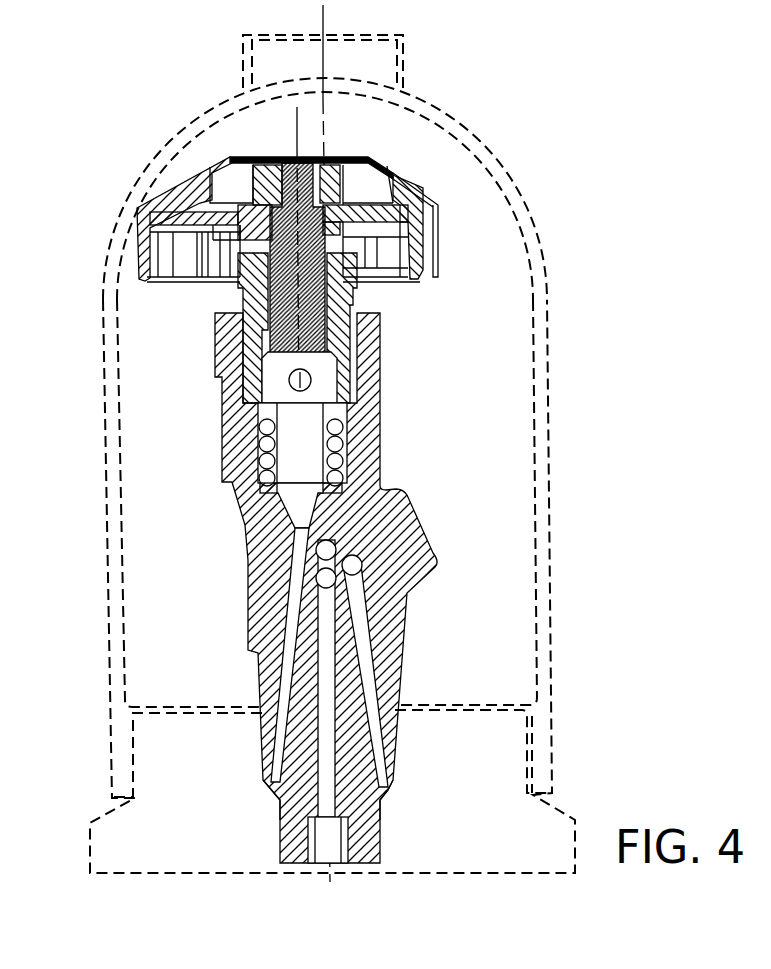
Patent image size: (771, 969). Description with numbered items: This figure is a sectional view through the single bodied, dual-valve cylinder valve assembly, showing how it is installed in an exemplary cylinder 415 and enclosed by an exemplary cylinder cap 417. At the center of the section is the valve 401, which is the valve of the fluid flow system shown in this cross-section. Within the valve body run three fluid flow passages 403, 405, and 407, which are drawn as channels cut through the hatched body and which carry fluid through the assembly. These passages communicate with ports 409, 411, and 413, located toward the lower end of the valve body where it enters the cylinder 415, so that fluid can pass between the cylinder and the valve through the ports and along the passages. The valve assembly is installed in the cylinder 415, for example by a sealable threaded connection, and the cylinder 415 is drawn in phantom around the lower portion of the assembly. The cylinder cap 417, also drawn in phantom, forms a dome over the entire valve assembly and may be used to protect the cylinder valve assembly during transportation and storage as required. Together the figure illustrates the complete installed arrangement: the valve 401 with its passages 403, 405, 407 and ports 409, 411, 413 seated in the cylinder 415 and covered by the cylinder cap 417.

The valve 401 is at (400, 370).
The fluid flow passage 403 is at (295, 610).
The fluid flow passage 405 is at (327, 651).
The fluid flow passage 407 is at (372, 670).
The port 409 is at (280, 797).
The port 411 is at (333, 862).
The port 413 is at (388, 793).
The cylinder 415 is at (190, 762).
The cylinder cap 417 is at (550, 459).